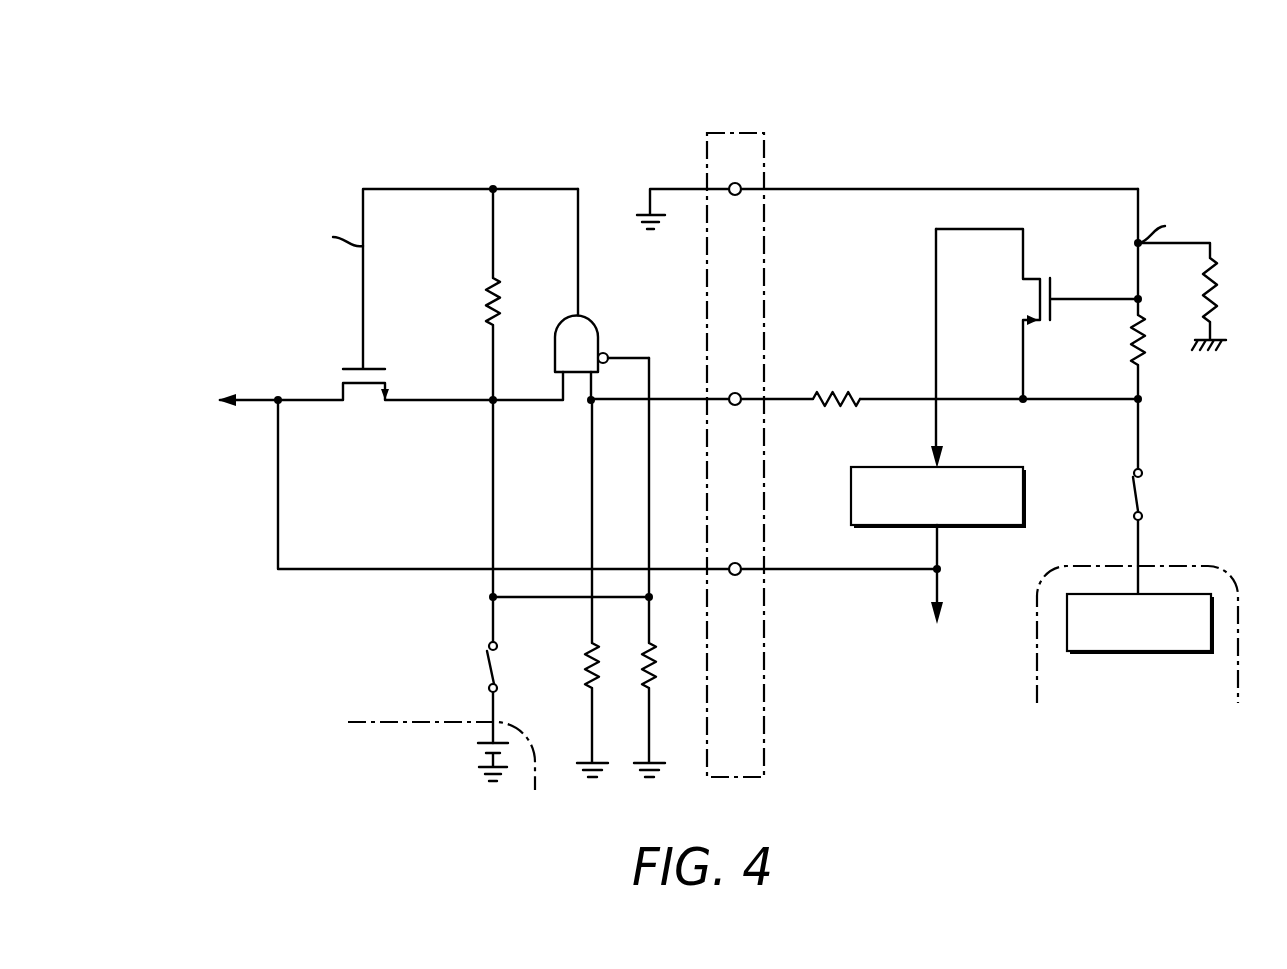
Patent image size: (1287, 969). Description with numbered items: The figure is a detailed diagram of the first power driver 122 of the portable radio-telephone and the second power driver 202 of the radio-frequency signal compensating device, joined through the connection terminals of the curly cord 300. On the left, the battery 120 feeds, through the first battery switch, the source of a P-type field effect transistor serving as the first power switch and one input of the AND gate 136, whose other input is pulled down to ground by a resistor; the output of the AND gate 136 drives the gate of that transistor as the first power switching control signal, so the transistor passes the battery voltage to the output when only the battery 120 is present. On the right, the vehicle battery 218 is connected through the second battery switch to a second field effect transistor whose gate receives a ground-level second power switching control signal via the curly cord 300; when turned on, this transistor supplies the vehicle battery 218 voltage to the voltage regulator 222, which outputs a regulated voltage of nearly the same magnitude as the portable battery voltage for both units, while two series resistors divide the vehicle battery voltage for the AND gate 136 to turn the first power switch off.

The first power driver 122 is at (278, 150).
The second power driver 202 is at (1195, 146).
The AND gate 136 is at (596, 326).
The battery 120 is at (464, 752).
The voltage regulator 222 is at (851, 497).
The vehicle battery 218 is at (1139, 652).
The curly cord 300 is at (765, 748).